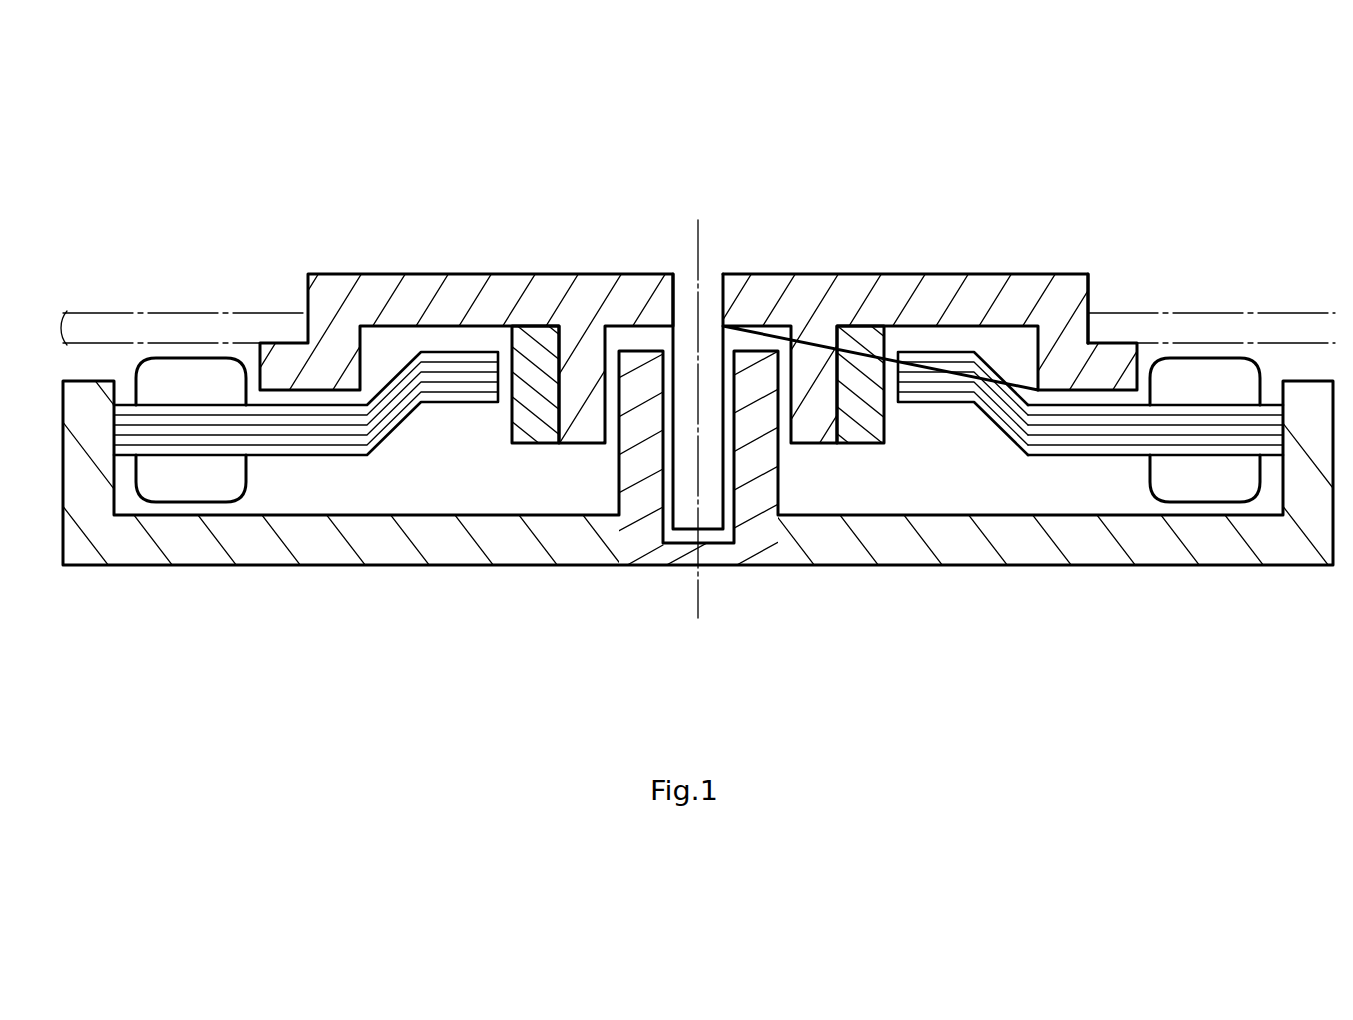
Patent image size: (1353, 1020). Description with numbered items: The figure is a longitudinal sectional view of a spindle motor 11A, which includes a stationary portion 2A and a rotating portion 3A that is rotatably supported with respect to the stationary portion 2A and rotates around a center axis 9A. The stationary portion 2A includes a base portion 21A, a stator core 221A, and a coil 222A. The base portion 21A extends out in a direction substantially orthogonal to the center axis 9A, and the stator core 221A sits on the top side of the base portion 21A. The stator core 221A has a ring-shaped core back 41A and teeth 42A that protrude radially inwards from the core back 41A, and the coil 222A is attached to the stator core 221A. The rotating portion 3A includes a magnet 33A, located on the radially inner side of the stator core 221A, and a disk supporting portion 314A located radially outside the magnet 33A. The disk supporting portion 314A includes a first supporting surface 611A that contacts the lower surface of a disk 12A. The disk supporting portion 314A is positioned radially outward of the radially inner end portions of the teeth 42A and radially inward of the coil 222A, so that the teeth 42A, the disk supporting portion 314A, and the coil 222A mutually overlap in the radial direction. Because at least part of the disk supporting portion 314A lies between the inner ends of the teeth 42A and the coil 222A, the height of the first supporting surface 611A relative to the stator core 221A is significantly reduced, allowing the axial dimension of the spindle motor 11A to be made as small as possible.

The spindle motor 11A is at (418, 214).
The disk 12A is at (192, 325).
The center axis 9A is at (698, 238).
The rotating portion 3A is at (781, 250).
The stationary portion 2A is at (773, 590).
The base portion 21A is at (958, 547).
The stator core 221A is at (1232, 632).
The coil 222A is at (1202, 380).
The core back 41A is at (1272, 432).
The teeth 42A is at (1100, 429).
The magnet 33A is at (537, 392).
The disk supporting portion 314A is at (1100, 373).
The first supporting surface 611A is at (1118, 347).